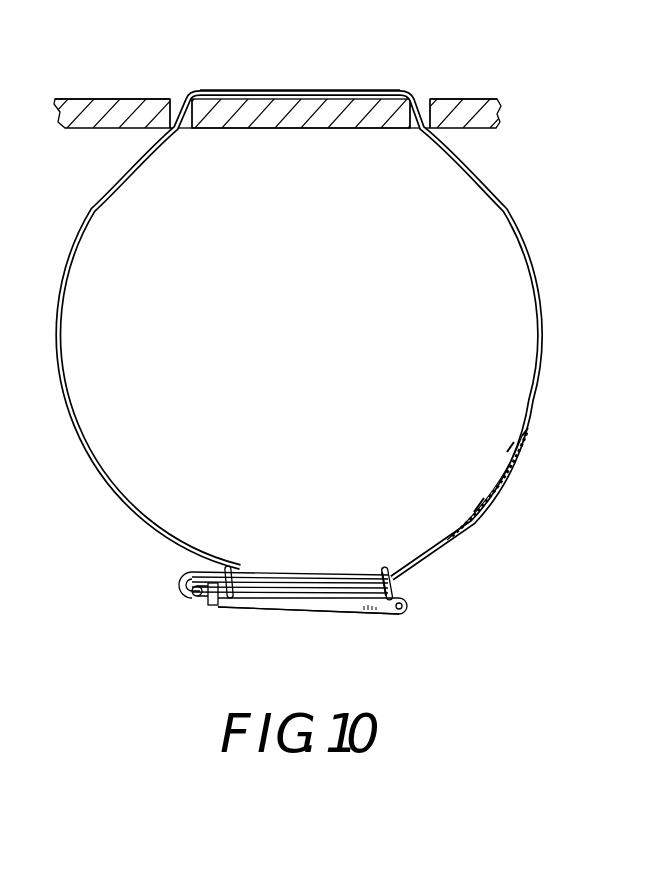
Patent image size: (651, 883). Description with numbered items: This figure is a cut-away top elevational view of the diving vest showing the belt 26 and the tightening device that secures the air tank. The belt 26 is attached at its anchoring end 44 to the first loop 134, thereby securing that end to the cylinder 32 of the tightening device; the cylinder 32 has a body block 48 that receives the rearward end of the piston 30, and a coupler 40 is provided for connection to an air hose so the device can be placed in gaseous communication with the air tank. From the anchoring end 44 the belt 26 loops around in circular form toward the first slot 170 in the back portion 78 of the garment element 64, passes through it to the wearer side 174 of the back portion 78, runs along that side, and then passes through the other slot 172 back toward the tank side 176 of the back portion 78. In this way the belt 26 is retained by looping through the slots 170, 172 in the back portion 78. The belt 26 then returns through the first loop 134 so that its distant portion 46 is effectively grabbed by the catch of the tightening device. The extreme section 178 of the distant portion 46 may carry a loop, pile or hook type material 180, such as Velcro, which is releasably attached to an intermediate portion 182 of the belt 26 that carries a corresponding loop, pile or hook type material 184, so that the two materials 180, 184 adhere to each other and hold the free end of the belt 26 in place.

The belt 26 is at (288, 90).
The piston 30 is at (205, 600).
The cylinder 32 is at (337, 614).
The coupler 40 is at (405, 610).
The anchoring end 44 is at (378, 578).
The distant portion 46 is at (175, 598).
The body block 48 is at (280, 605).
The garment element 64 is at (498, 97).
The back portion 78 is at (118, 98).
The first loop 134 is at (230, 566).
The first slot 170 is at (173, 107).
The other slot 172 is at (423, 107).
The wearer side 174 is at (357, 97).
The tank side 176 is at (310, 130).
The extreme section 178 is at (500, 483).
The loop or pile or hook type material 180 is at (523, 437).
The intermediate portion 182 is at (509, 452).
The loop or pile or hook type material 184 is at (478, 502).